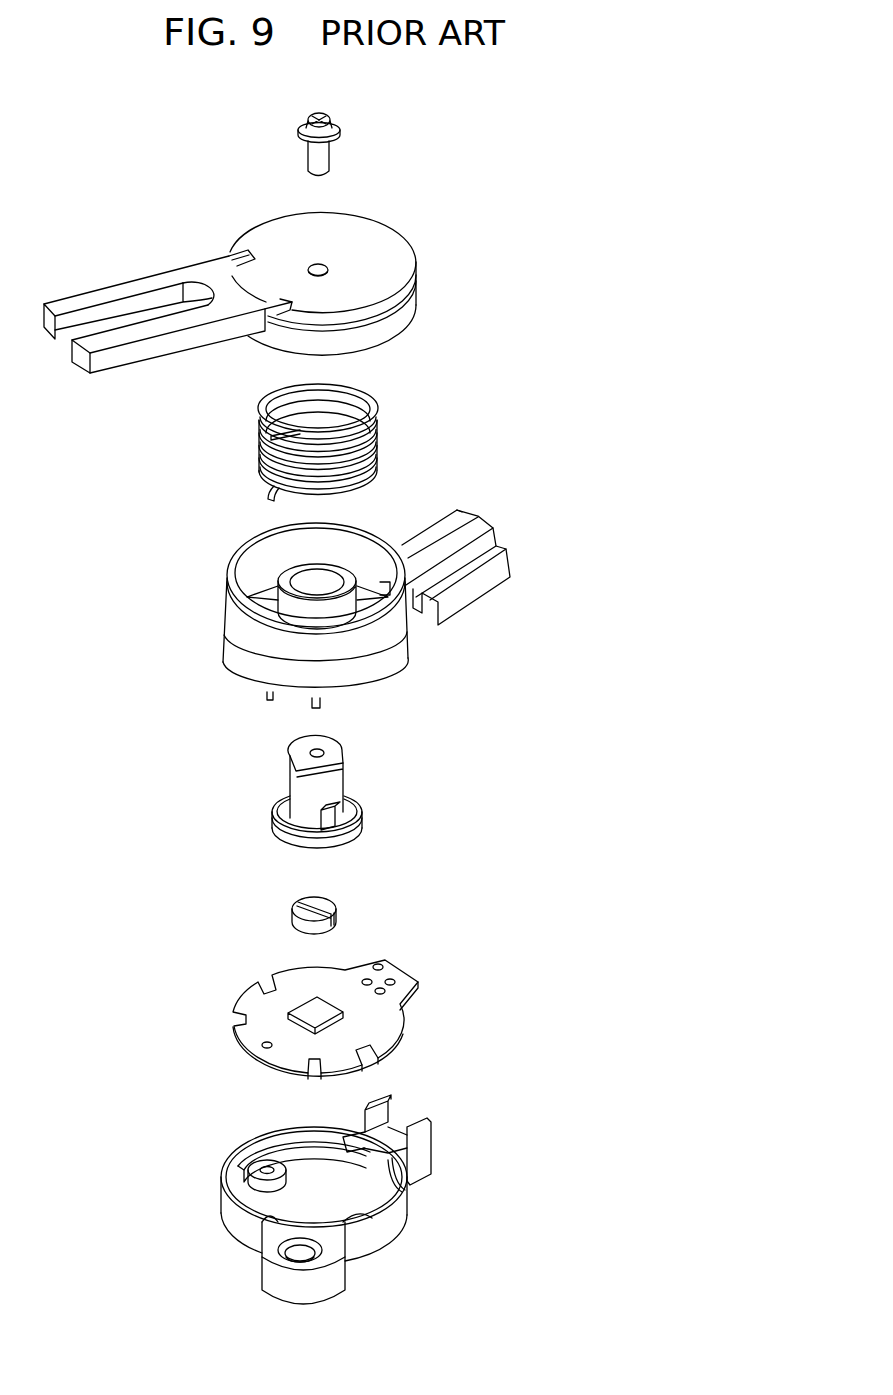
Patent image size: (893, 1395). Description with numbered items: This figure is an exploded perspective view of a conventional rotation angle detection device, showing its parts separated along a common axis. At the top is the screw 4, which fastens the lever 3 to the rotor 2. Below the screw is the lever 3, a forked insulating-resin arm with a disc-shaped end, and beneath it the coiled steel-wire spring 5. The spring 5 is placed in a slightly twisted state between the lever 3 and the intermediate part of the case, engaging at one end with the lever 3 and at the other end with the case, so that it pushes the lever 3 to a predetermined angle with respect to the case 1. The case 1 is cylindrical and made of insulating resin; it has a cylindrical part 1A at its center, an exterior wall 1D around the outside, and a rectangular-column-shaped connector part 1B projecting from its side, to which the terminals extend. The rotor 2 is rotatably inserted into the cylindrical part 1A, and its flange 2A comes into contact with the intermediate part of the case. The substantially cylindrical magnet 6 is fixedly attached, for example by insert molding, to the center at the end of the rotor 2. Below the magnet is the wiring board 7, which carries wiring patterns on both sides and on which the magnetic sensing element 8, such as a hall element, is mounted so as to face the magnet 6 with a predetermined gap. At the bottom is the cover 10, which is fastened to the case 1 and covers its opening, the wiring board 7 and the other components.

The case 1 is at (319, 623).
The cylindrical part 1A is at (302, 582).
The connector part 1B is at (483, 590).
The exterior wall 1D is at (393, 678).
The rotor 2 is at (250, 801).
The flange 2A is at (273, 820).
The lever 3 is at (185, 272).
The screw 4 is at (345, 131).
The spring 5 is at (378, 430).
The magnet 6 is at (337, 910).
The wiring board 7 is at (322, 1023).
The magnetic sensing element 8 is at (303, 1018).
The cover 10 is at (405, 1232).